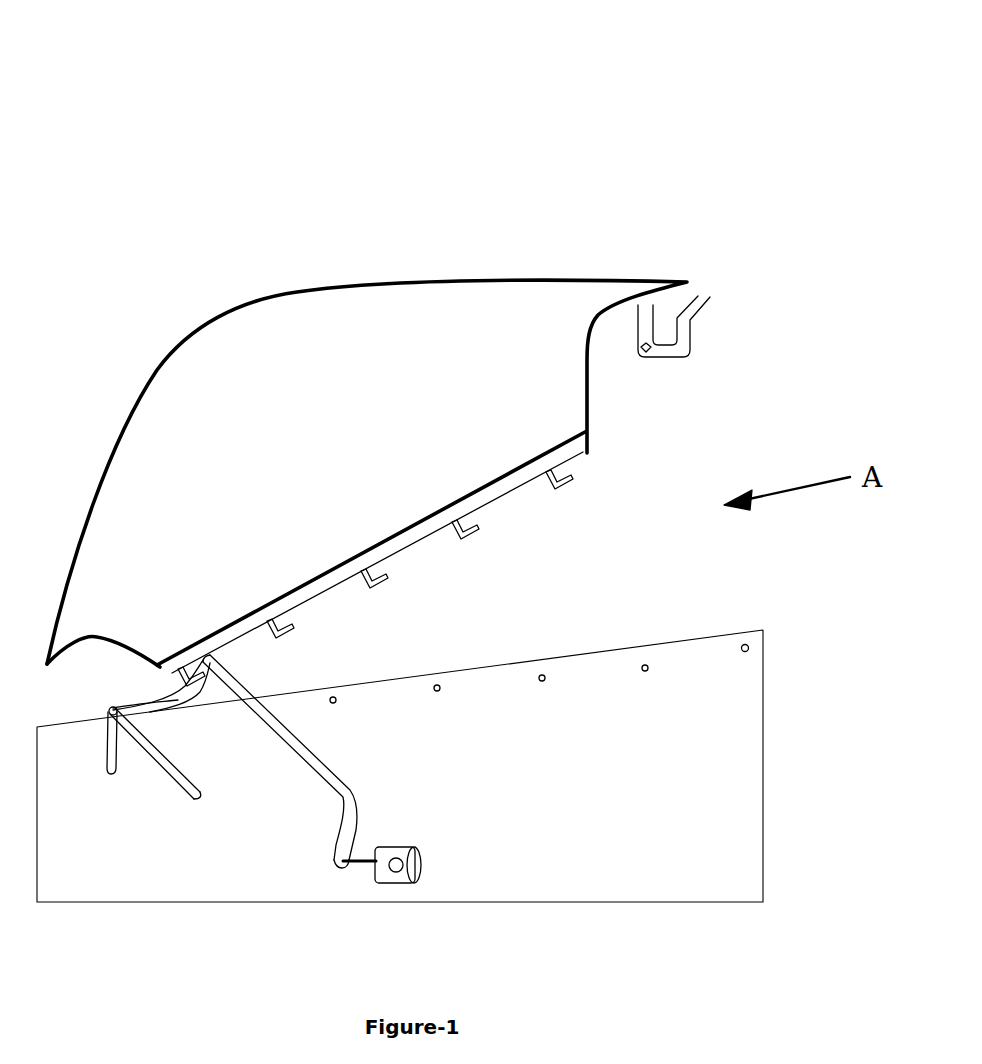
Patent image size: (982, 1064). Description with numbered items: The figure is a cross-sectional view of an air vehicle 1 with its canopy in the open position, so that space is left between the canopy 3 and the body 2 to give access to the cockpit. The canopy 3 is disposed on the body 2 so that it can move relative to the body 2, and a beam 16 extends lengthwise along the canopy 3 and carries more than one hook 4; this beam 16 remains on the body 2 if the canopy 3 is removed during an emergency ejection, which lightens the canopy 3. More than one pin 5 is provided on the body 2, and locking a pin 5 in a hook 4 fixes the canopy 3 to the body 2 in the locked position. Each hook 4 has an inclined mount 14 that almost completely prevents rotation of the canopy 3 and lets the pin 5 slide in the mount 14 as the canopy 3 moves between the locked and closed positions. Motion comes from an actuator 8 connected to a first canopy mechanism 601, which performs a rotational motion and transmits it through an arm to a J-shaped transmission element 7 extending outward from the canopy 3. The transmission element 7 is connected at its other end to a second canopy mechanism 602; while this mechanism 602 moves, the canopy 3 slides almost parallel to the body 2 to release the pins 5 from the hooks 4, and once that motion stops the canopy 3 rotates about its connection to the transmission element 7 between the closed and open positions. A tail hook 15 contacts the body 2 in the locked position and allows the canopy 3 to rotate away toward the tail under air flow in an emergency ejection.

The air vehicle 1 is at (740, 168).
The body 2 is at (737, 790).
The canopy 3 is at (180, 343).
The hook 4 is at (465, 522).
The pin 5 is at (543, 678).
The transmission element 7 is at (189, 710).
The actuator 8 is at (426, 870).
The mount 14 is at (383, 567).
The tail hook 15 is at (700, 332).
The beam 16 is at (578, 454).
The first canopy mechanism 601 is at (199, 791).
The second canopy mechanism 602 is at (343, 784).